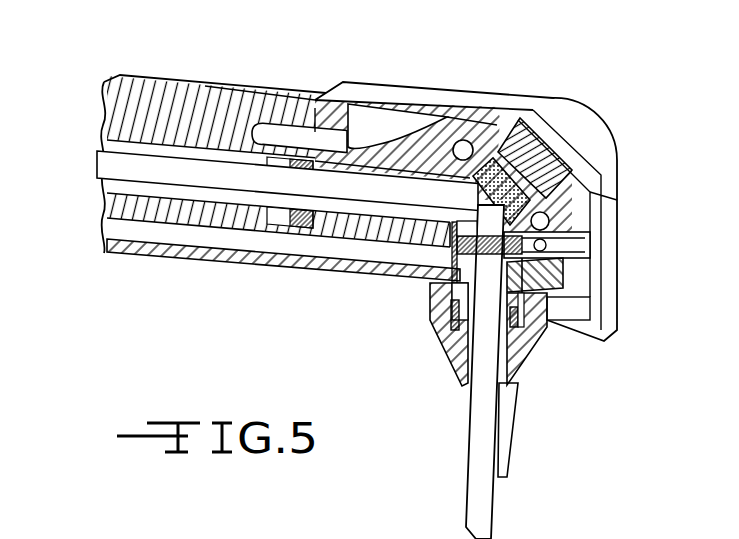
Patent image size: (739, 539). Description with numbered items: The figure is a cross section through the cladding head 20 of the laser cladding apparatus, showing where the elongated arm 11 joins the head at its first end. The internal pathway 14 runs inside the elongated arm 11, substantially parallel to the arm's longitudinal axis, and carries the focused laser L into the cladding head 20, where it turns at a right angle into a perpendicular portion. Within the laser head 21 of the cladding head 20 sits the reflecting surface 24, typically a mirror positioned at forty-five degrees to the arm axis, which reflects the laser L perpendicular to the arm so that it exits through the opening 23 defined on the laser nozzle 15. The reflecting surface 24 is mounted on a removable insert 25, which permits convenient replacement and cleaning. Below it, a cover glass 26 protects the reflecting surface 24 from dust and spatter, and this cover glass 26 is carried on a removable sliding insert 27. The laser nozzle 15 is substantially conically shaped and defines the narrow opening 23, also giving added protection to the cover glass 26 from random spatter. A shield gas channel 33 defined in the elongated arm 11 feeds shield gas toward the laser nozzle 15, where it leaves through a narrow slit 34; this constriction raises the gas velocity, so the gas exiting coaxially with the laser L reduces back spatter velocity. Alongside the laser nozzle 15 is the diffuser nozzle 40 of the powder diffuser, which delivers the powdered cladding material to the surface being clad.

The elongated arm 11 is at (187, 76).
The internal pathway 14 is at (125, 162).
The laser nozzle 15 is at (520, 340).
The cladding head 20 is at (395, 58).
The laser head 21 is at (432, 88).
The opening 23 is at (466, 392).
The reflecting surface 24 is at (491, 185).
The removable insert 25 is at (530, 153).
The cover glass 26 is at (557, 230).
The removable sliding insert 27 is at (582, 243).
The shield gas channel 33 is at (228, 243).
The narrow slit 34 is at (437, 323).
The diffuser nozzle 40 is at (507, 423).
The laser L is at (478, 503).